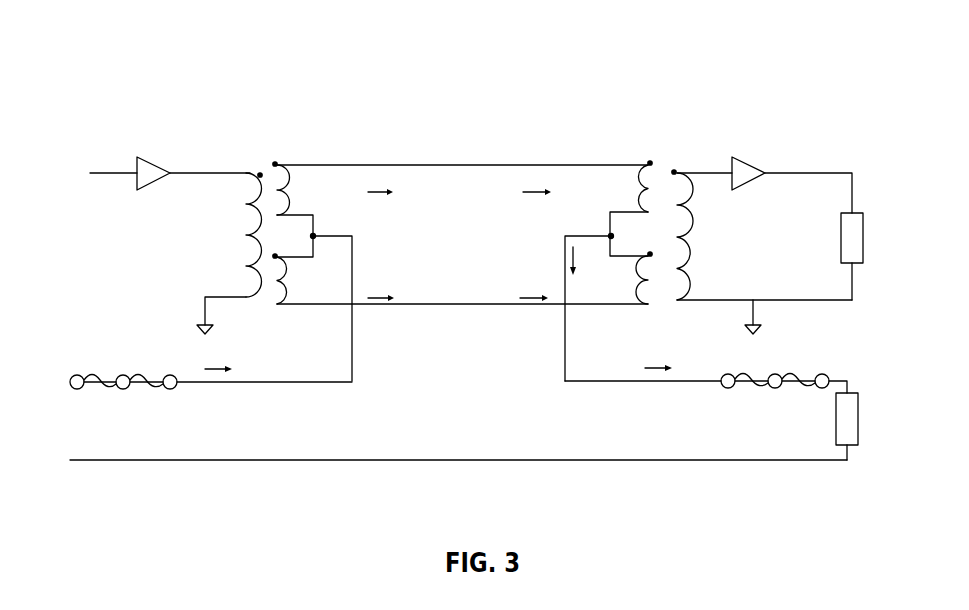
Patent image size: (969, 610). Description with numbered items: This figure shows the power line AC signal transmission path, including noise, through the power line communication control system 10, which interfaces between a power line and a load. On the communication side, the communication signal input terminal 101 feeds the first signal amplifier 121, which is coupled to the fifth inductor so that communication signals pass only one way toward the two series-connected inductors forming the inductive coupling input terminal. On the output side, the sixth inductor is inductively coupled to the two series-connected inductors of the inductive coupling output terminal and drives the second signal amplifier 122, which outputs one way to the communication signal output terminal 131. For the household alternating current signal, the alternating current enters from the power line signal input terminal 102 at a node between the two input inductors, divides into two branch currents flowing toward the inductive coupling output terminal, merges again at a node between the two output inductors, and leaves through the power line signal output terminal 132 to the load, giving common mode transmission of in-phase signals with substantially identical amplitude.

The power line communication control system 10 is at (490, 77).
The communication signal input terminal 101 is at (92, 177).
The power line signal input terminal 102 is at (435, 401).
The signal amplifier 121 is at (151, 161).
The signal amplifier 122 is at (791, 170).
The communication signal output terminal 131 is at (872, 256).
The power line signal output terminal 132 is at (864, 420).